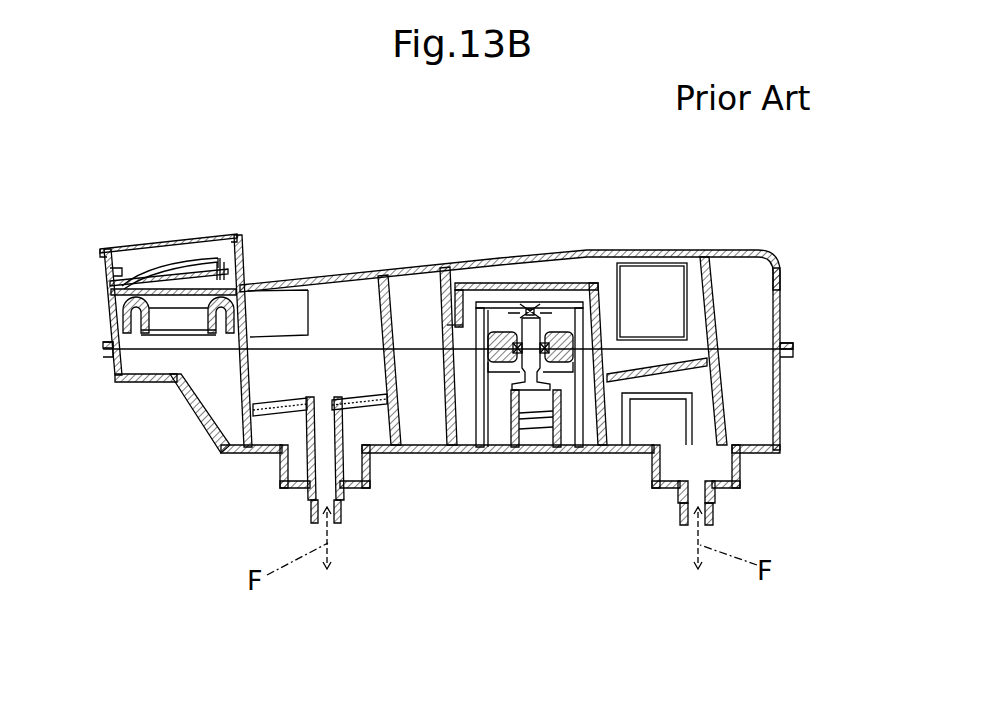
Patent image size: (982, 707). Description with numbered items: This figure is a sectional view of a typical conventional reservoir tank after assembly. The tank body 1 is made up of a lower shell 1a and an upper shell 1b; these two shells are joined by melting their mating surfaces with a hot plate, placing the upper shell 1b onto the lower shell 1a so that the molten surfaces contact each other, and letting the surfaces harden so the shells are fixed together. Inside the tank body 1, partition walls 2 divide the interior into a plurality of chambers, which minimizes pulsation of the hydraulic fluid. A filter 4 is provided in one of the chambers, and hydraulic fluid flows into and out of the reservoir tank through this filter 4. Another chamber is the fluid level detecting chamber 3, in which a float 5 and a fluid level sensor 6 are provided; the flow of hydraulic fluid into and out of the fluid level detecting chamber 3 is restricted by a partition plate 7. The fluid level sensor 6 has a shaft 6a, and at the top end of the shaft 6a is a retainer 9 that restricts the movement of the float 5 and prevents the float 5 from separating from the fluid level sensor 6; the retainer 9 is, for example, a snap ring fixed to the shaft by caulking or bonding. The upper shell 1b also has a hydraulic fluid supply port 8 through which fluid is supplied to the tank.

The tank body 1 is at (112, 365).
The lower shell 1a is at (197, 430).
The upper shell 1b is at (500, 254).
The partition walls 2 is at (240, 380).
The fluid level detecting chamber 3 is at (555, 310).
The filter 4 is at (273, 410).
The float 5 is at (573, 457).
The fluid level sensor 6 is at (537, 377).
The shaft 6a is at (545, 327).
The partition plate 7 is at (463, 283).
The hydraulic fluid supply port 8 is at (108, 277).
The retainer 9 is at (517, 305).